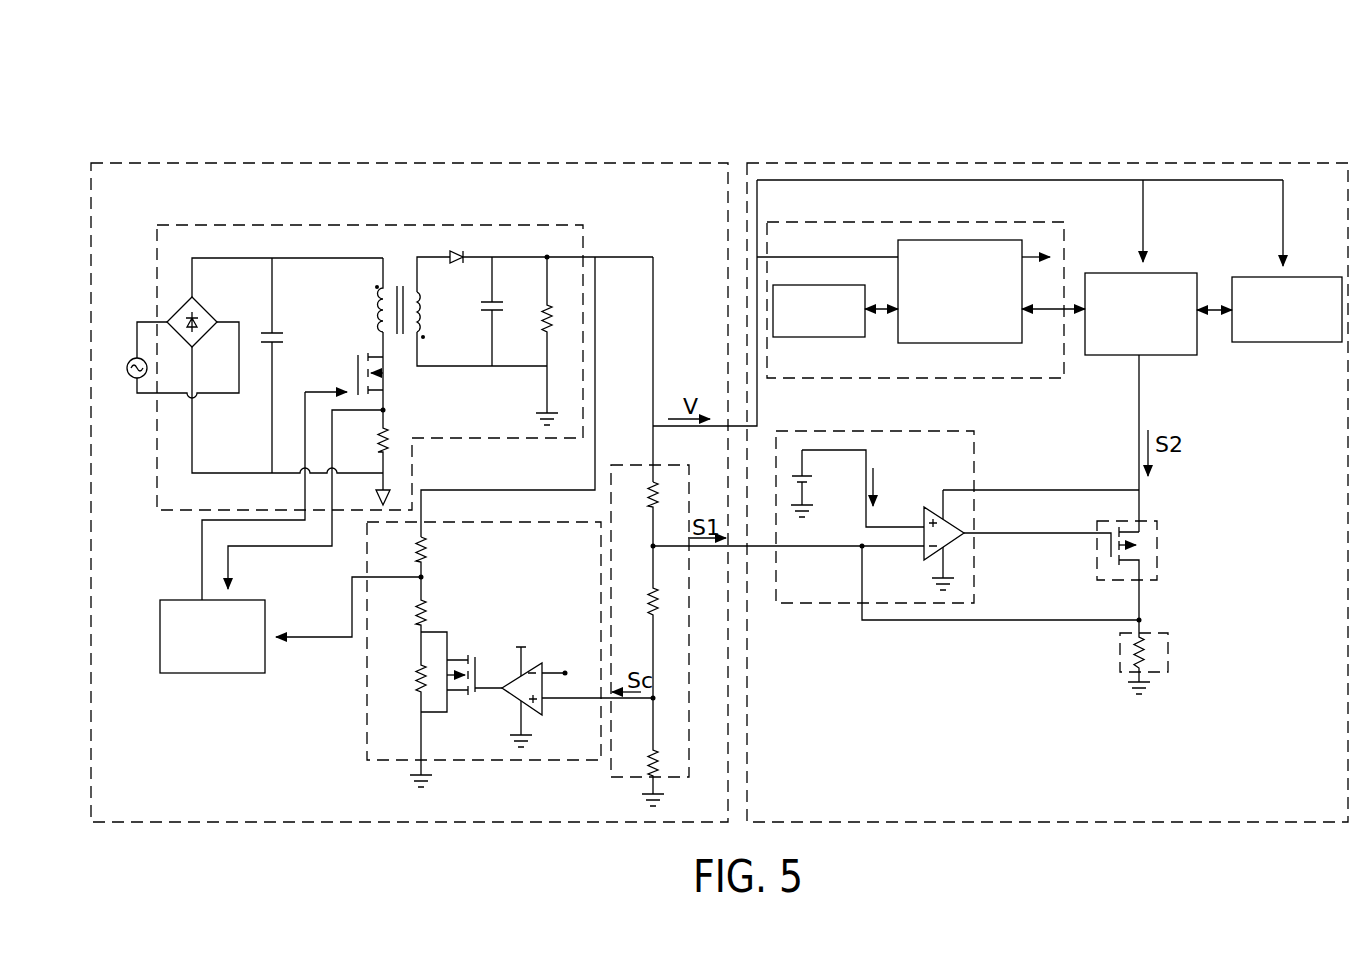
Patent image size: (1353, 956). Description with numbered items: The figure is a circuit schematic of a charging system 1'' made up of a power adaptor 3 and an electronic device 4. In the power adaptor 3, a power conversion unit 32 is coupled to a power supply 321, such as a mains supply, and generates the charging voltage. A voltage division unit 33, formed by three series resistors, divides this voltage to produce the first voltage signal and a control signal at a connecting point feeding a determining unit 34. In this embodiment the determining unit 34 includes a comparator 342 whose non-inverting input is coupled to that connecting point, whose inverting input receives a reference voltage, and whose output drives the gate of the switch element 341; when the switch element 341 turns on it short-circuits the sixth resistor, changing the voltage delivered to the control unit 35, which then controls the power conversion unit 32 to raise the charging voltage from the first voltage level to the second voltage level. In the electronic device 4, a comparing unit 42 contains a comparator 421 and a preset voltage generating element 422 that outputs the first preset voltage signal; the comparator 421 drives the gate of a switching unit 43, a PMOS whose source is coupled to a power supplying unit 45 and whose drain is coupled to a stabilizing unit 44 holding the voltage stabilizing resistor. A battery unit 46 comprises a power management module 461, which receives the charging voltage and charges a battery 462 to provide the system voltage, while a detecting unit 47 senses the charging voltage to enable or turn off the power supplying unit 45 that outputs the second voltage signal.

The charging system 1'' is at (719, 437).
The power adaptor 3 is at (459, 162).
The electronic device 4 is at (1092, 160).
The power conversion unit 32 is at (225, 223).
The power supply 321 is at (128, 362).
The voltage division unit 33 is at (633, 463).
The determining unit 34 is at (367, 732).
The switch element 341 is at (456, 700).
The comparator 342 is at (533, 660).
The control unit 35 is at (160, 637).
The comparing unit 42 is at (977, 459).
The comparator 421 is at (923, 551).
The preset voltage generating element 422 is at (823, 483).
The switching unit 43 is at (1157, 552).
The stabilizing unit 44 is at (1168, 645).
The power supplying unit 45 is at (1163, 273).
The battery unit 46 is at (852, 220).
The power management module 461 is at (937, 343).
The battery 462 is at (805, 338).
The detecting unit 47 is at (1305, 277).